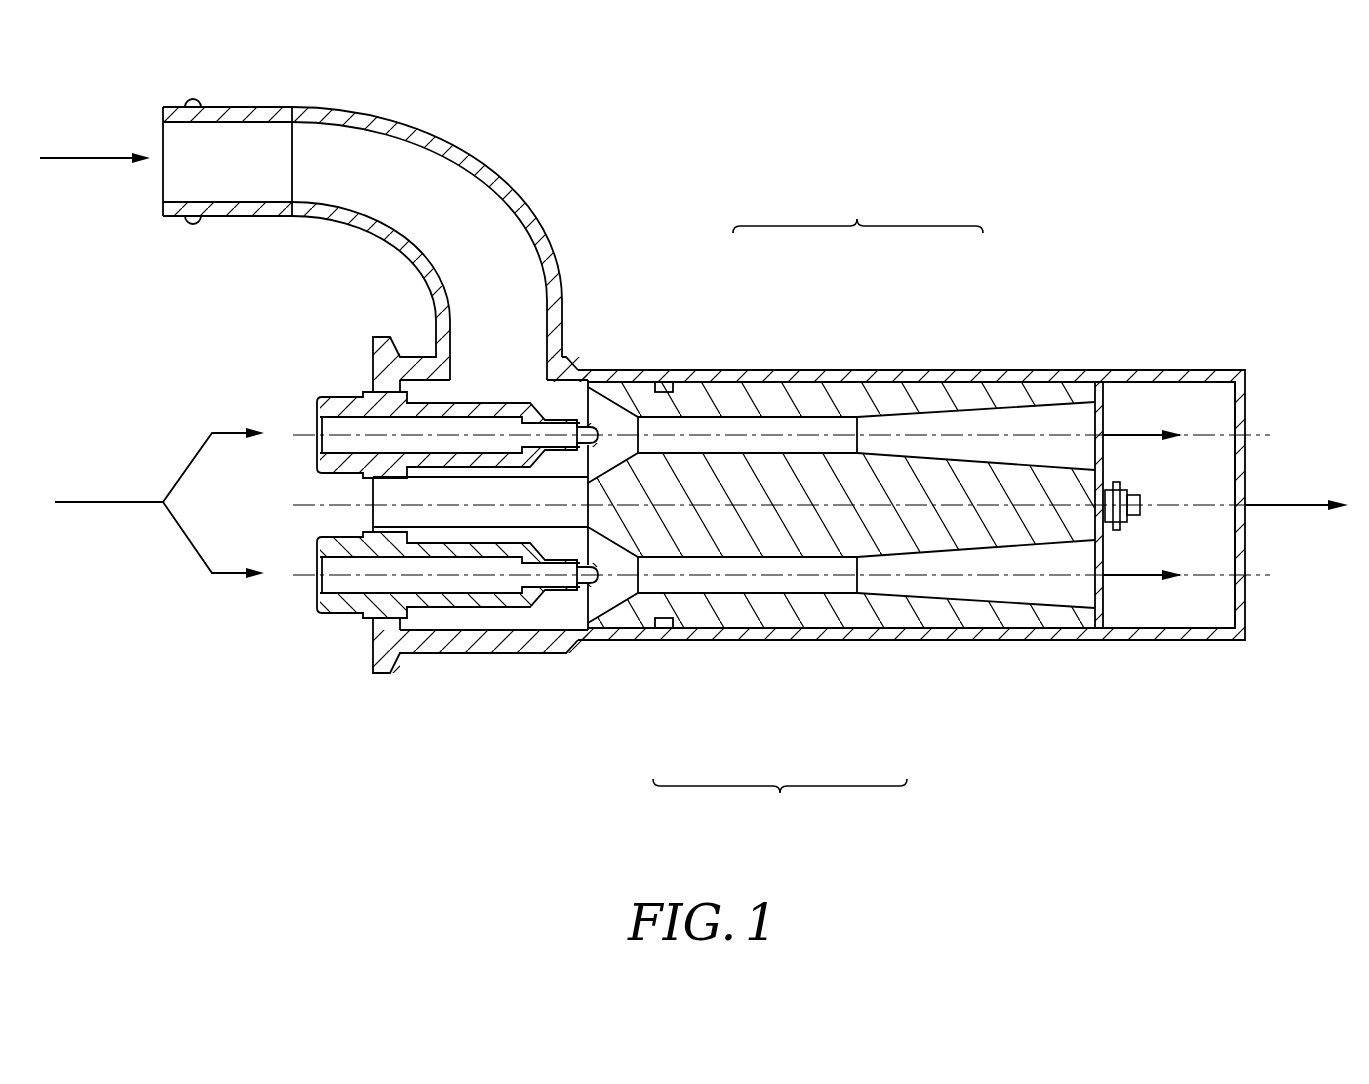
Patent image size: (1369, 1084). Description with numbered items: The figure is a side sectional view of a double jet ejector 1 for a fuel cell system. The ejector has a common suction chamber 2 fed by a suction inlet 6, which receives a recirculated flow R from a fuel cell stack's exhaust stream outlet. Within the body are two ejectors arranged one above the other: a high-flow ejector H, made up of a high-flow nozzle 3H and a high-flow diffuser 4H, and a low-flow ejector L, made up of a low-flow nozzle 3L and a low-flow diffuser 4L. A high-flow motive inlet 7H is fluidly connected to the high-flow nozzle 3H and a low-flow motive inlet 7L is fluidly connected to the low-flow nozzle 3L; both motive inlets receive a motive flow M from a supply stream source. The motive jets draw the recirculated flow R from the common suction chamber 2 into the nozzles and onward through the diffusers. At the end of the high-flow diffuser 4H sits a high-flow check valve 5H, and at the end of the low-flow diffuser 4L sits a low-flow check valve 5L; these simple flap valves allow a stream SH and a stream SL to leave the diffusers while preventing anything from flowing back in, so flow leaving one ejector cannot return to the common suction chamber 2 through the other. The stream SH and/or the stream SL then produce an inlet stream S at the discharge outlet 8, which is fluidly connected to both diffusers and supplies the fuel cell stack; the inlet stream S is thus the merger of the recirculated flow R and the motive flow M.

The double jet ejector 1 is at (1062, 140).
The common suction chamber 2 is at (528, 390).
The high-flow nozzle 3H is at (572, 428).
The low-flow nozzle 3L is at (572, 582).
The high-flow diffuser 4H is at (767, 433).
The low-flow diffuser 4L is at (777, 577).
The high-flow check valve 5H is at (1097, 420).
The low-flow check valve 5L is at (1097, 592).
The suction inlet 6 is at (212, 143).
The high-flow motive inlet 7H is at (357, 432).
The low-flow motive inlet 7L is at (352, 582).
The discharge outlet 8 is at (1247, 410).
The stream SH is at (1127, 435).
The stream SL is at (1127, 577).
The high-flow ejector H is at (858, 207).
The low-flow ejector L is at (780, 805).
The recirculated flow R is at (95, 144).
The motive flow M is at (159, 503).
The inlet stream S is at (1298, 483).